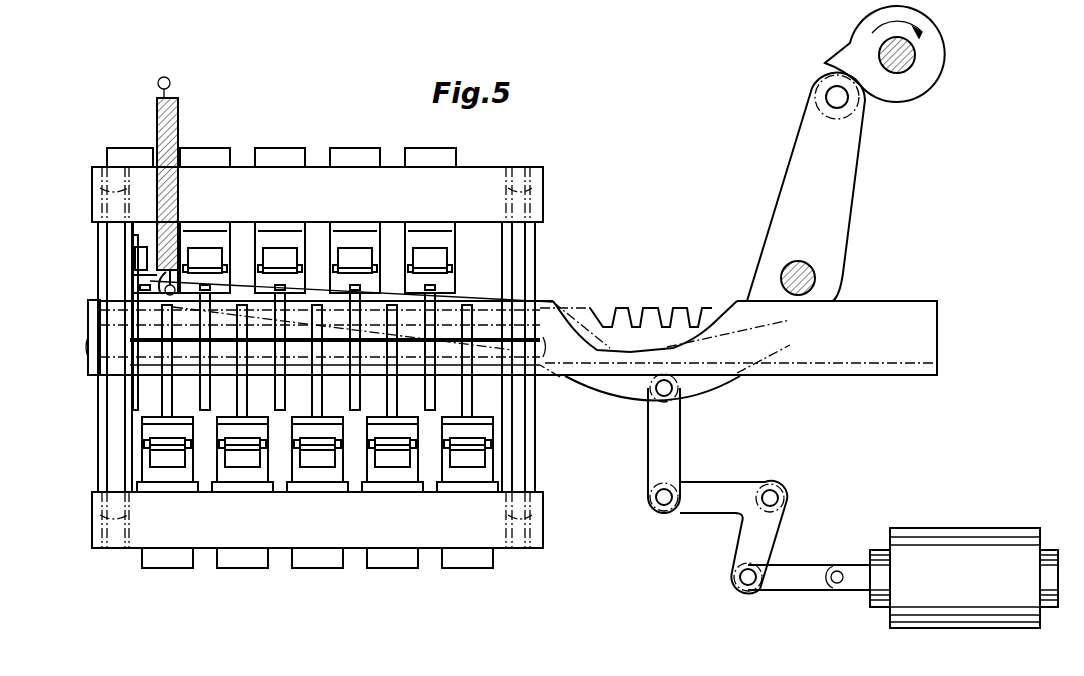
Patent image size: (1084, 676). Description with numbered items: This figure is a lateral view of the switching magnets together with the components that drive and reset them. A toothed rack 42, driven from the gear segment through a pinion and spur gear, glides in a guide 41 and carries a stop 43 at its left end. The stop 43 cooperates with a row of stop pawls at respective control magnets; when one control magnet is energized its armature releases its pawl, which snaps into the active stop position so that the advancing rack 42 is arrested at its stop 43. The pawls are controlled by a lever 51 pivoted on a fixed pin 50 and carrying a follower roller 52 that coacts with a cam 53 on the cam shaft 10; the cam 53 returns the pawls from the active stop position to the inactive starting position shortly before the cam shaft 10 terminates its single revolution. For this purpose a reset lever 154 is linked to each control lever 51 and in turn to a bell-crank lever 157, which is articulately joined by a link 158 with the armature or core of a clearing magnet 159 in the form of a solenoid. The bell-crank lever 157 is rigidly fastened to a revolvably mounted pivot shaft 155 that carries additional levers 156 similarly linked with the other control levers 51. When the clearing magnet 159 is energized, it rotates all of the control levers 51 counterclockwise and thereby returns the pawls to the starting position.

The cam shaft 10 is at (887, 50).
The follower roller 52 is at (815, 105).
The cam 53 is at (912, 105).
The fixed pin 50 is at (817, 275).
The rack 42 is at (678, 306).
The guide 41 is at (860, 373).
The lever 51 is at (713, 393).
The reset lever 154 is at (653, 468).
The pivot shaft 155 is at (777, 493).
The additional levers 156 is at (765, 480).
The bell-crank lever 157 is at (775, 520).
The link 158 is at (802, 580).
The clearing magnet 159 is at (968, 548).
The stop 43 is at (123, 323).